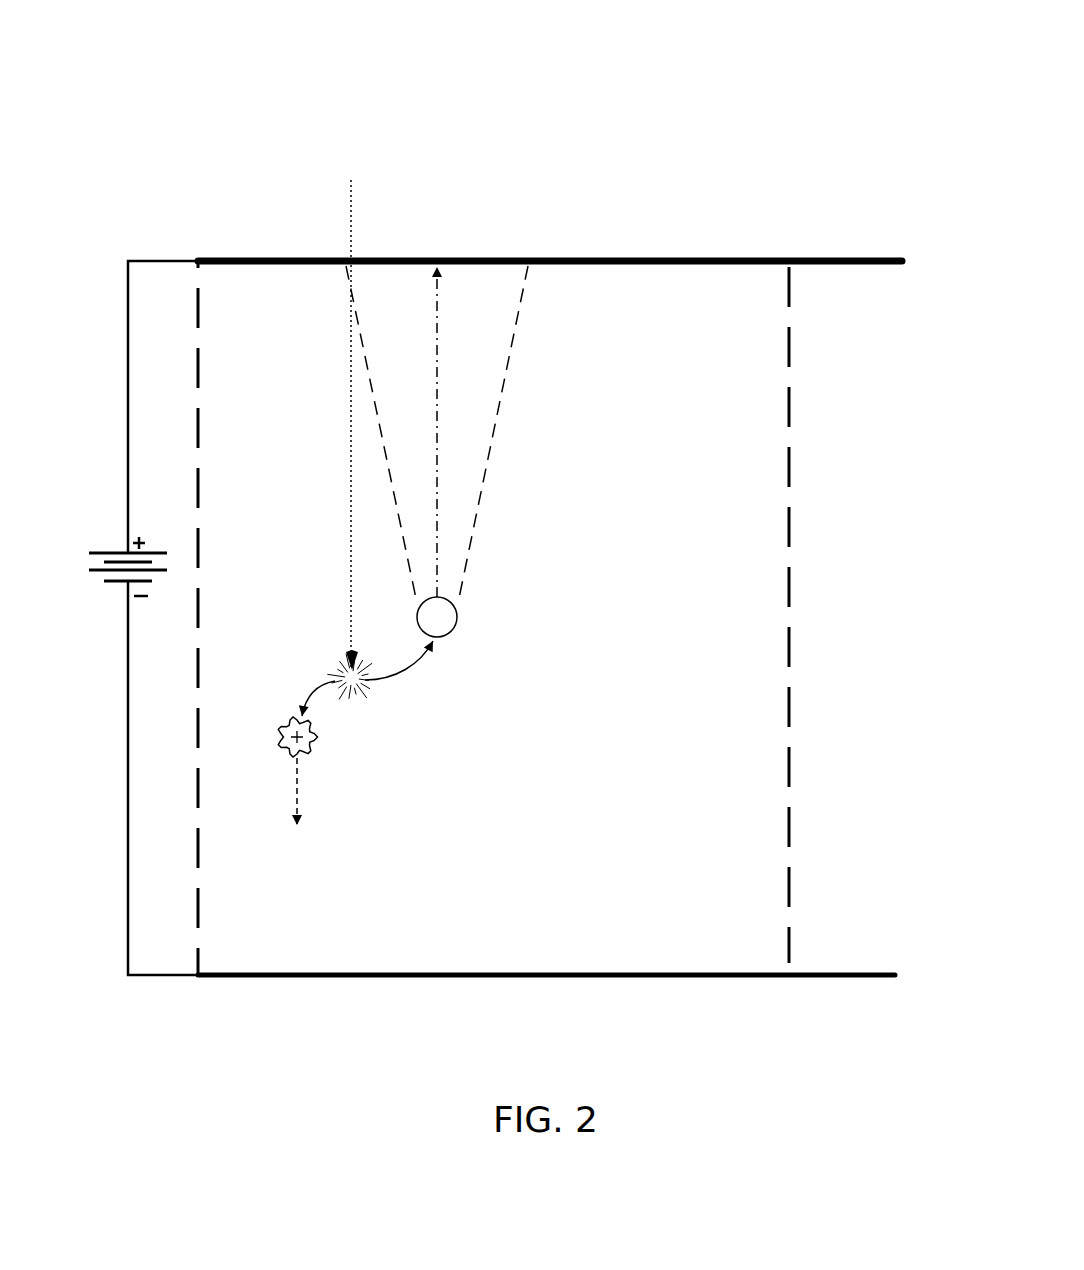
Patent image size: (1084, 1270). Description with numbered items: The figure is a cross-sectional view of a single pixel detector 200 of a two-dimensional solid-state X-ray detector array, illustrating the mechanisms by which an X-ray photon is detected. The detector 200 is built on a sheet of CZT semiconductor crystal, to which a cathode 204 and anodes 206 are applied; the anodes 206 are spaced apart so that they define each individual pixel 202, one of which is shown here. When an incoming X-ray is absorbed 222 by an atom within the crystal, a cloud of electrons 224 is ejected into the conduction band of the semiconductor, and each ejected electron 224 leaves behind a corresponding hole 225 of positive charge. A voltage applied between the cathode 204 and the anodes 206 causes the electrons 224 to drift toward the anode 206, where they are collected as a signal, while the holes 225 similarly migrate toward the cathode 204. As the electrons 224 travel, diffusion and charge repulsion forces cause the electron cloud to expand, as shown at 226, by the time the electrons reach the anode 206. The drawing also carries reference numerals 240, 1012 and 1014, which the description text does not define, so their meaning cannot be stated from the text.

The pixel detector 200 is at (492, 556).
The pixel 202 is at (521, 894).
The cathode 204 is at (266, 978).
The anode 206 is at (223, 258).
The absorption 222 is at (342, 666).
The electron 224 is at (458, 608).
The hole 225 is at (289, 756).
The electron cloud expansion 226 is at (380, 348).
The incident radiation / photon 240 is at (352, 228).
The first external component 1012 is at (842, 200).
The second external component 1014 is at (915, 55).